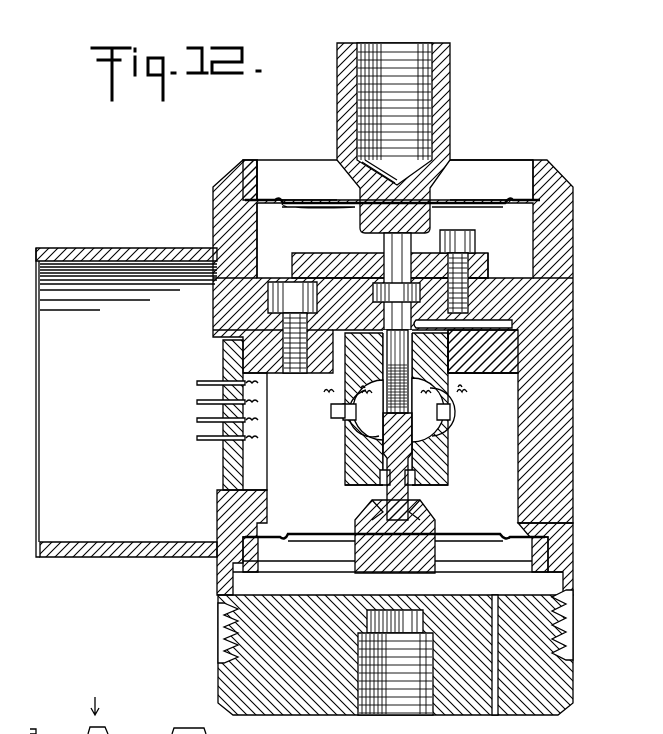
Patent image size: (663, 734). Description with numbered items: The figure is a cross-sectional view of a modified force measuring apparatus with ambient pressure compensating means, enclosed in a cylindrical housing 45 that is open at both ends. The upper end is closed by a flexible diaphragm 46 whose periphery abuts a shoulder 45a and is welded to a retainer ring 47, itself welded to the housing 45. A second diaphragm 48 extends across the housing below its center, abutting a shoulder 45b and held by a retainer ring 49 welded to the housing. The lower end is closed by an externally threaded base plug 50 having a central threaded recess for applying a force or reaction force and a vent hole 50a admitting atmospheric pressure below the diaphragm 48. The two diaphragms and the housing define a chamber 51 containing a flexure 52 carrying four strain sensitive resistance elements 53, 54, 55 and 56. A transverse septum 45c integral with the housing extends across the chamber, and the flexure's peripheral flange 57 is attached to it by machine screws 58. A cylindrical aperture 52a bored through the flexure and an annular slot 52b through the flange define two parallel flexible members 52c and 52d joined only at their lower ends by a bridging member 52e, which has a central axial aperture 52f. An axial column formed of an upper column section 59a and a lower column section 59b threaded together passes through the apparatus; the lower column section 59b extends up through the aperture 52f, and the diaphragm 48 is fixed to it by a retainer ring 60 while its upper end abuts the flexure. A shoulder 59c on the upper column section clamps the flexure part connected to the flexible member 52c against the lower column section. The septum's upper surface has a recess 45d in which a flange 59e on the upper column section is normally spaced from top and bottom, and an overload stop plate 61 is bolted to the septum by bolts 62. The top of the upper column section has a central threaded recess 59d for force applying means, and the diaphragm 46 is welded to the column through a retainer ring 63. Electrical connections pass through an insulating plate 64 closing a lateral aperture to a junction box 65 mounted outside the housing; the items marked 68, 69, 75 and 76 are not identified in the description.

The cylindrical housing 45 is at (560, 495).
The shoulder 45a is at (252, 201).
The shoulder 45b is at (548, 527).
The transverse septum 45c is at (500, 300).
The recess 45d is at (258, 306).
The flexible diaphragm 46 is at (323, 200).
The retainer ring 47 is at (250, 197).
The diaphragm 48 is at (533, 556).
The retainer ring 49 is at (562, 552).
The base plug 50 is at (560, 700).
The vent hole 50a is at (497, 705).
The chamber 51 is at (508, 490).
The flexure 52 is at (449, 463).
The cylindrical aperture 52a is at (346, 455).
The annular slot 52b is at (498, 361).
The flexible member 52c is at (356, 437).
The flexible member 52d is at (455, 445).
The bridging member 52e is at (420, 490).
The aperture 52f is at (384, 490).
The strain sensitive resistance element 53 is at (356, 421).
The strain sensitive resistance element 54 is at (344, 405).
The strain sensitive resistance element 55 is at (446, 425).
The strain sensitive resistance element 56 is at (458, 408).
The peripheral flange 57 is at (517, 350).
The machine screw 58 is at (268, 297).
The upper column section 59a is at (415, 250).
The lower column section 59b is at (422, 500).
The shoulder 59c is at (512, 325).
The central threaded recess 59d is at (430, 66).
The flange 59e is at (455, 277).
The retainer ring 60 is at (356, 515).
The overload stop plate 61 is at (345, 256).
The bolt 62 is at (472, 243).
The retainer ring 63 is at (456, 203).
The insulating plate 64 is at (222, 468).
The junction box 65 is at (97, 268).
The fitting 68 is at (196, 722).
The conduit 69 is at (121, 724).
The line 75 is at (34, 718).
The flow arrow 76 is at (111, 708).